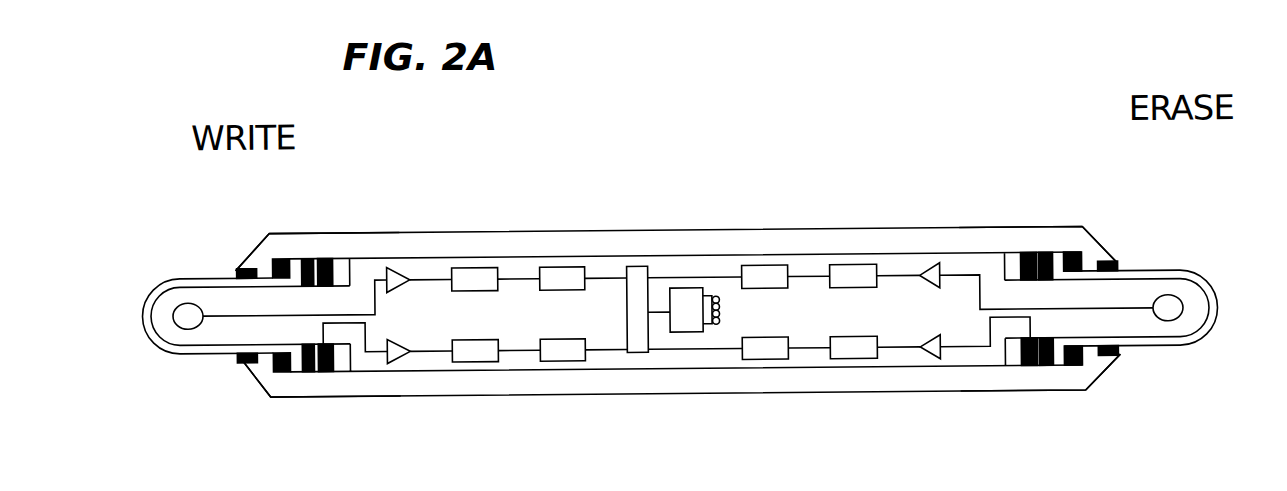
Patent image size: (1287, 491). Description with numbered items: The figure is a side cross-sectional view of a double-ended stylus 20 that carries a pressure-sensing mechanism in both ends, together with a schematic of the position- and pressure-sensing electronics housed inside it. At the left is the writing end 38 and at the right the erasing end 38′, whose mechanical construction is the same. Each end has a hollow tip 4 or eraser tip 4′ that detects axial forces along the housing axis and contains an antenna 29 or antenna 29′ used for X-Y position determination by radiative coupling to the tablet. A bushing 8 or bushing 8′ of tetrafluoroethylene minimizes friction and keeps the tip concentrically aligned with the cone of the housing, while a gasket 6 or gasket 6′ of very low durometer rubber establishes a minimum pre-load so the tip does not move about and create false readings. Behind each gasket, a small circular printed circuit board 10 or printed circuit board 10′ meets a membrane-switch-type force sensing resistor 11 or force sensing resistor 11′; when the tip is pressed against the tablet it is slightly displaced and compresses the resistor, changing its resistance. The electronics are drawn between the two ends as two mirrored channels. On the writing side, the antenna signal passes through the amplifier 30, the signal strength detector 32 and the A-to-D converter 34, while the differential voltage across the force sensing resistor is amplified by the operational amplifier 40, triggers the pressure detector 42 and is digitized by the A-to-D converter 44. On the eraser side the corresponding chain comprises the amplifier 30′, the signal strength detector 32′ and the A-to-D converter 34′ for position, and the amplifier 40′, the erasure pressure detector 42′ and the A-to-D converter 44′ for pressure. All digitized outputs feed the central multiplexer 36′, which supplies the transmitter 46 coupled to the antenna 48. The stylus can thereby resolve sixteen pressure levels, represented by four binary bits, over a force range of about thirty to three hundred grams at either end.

The stylus 20 is at (664, 110).
The antenna 29 is at (181, 303).
The antenna 29′ is at (1172, 300).
The tip 4 is at (187, 274).
The eraser tip 4′ is at (1117, 266).
The writing end 38 is at (223, 240).
The erasing end 38′ is at (1052, 194).
The bushing 8 is at (243, 363).
The bushing 8′ is at (1120, 362).
The gasket 6 is at (277, 368).
The gasket 6′ is at (1073, 368).
The printed circuit board 10 is at (308, 368).
The printed circuit board 10′ is at (1043, 368).
The force sensing resistor 11 is at (323, 368).
The force sensing resistor 11′ is at (1032, 368).
The amplifier 30 is at (393, 265).
The amplifier 30′ is at (926, 262).
The operational amplifier 40 is at (405, 361).
The amplifier 40′ is at (933, 361).
The signal strength detector 32 is at (473, 266).
The signal strength detector 32′ is at (848, 266).
The A-to-D converter 34 is at (560, 266).
The A-to-D converter 34′ is at (762, 266).
The pressure detector 42 is at (483, 360).
The erasure pressure detector 42′ is at (863, 360).
The A-to-D converter 44 is at (564, 360).
The A-to-D converter 44′ is at (778, 360).
The multiplexer 36′ is at (638, 266).
The transmitter 46 is at (690, 288).
The antenna 48 is at (716, 341).